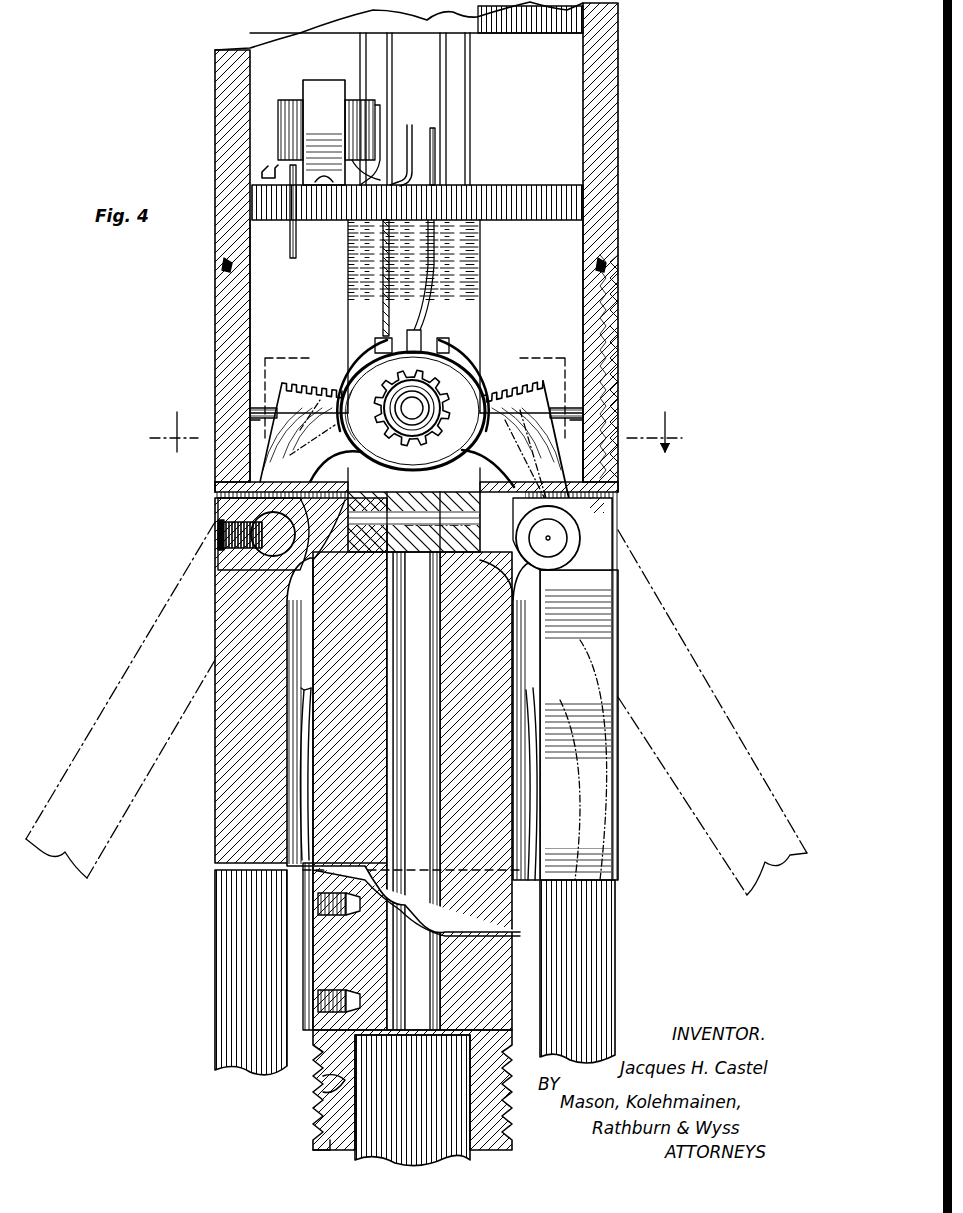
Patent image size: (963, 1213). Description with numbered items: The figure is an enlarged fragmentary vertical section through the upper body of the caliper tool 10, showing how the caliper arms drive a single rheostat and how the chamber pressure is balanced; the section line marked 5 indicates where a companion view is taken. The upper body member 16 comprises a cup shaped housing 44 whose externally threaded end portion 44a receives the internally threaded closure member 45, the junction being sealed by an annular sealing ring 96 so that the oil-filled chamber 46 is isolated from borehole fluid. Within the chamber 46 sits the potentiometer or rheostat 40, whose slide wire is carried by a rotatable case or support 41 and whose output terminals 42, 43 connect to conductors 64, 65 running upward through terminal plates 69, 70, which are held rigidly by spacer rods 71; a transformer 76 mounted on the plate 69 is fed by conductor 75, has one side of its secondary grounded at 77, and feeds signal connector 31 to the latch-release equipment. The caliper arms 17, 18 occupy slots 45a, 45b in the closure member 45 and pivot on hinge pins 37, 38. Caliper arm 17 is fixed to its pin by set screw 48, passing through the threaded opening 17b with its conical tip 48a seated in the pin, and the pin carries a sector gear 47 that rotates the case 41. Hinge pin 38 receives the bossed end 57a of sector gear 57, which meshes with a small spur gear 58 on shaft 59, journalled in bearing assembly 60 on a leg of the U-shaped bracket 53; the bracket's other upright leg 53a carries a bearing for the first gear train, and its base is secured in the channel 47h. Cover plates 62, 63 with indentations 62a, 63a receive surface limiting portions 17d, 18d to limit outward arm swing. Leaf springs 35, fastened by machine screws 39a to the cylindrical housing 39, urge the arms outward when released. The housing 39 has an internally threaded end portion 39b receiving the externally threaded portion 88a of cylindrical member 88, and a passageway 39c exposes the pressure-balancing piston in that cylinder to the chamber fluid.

The caliper tool 10 is at (671, 362).
The upper body member 16 is at (624, 187).
The caliper arm 17 is at (228, 818).
The internally threaded opening 17b is at (232, 560).
The surface limiting portion 17d is at (218, 490).
The caliper arm 18 is at (600, 529).
The surface limiting portion 18d is at (618, 500).
The signal connector 31 is at (296, 166).
The leaf springs 35 is at (304, 690).
The hinge pin 37 is at (306, 448).
The hinge pin 38 is at (552, 548).
The cylindrical housing 39 is at (332, 640).
The machine screws 39a is at (316, 905).
The internally threaded end portion 39b is at (328, 1085).
The passageway 39c is at (428, 767).
The potentiometer or rheostat 40 is at (493, 371).
The case or support 41 is at (352, 380).
The output terminal 42 is at (378, 340).
The output terminal 43 is at (420, 338).
The cup shaped housing 44 is at (606, 135).
The externally threaded end portion 44a is at (244, 332).
The closure member 45 is at (621, 394).
The slot 45a is at (300, 614).
The slot 45b is at (540, 658).
The chamber 46 is at (572, 98).
The sector gear 47 is at (276, 453).
The channel 47h is at (408, 490).
The set screw 48 is at (222, 536).
The conically shaped tip 48a is at (232, 521).
The U-shaped bracket 53 is at (428, 522).
The upright leg 53a is at (480, 282).
The sector gear 57 is at (556, 472).
The bossed end 57a is at (546, 512).
The spur gear 58 is at (460, 383).
The shaft 59 is at (414, 392).
The bearing assembly 60 is at (404, 398).
The cover plate 62 is at (215, 486).
The indentation 62a is at (258, 482).
The cover plate 63 is at (614, 484).
The indentation 63a is at (590, 498).
The conductor 64 is at (410, 130).
The conductor 65 is at (437, 139).
The terminal plate 69 is at (520, 190).
The terminal plate 70 is at (532, 38).
The spacer rods 71 is at (468, 54).
The conductor 75 is at (382, 118).
The transformer 76 is at (312, 85).
The ground connection 77 is at (271, 170).
The cylindrical member 88 is at (500, 1153).
The externally threaded portion 88a is at (330, 1142).
The annular sealing ring 96 is at (606, 268).
The section line 5 is at (416, 432).